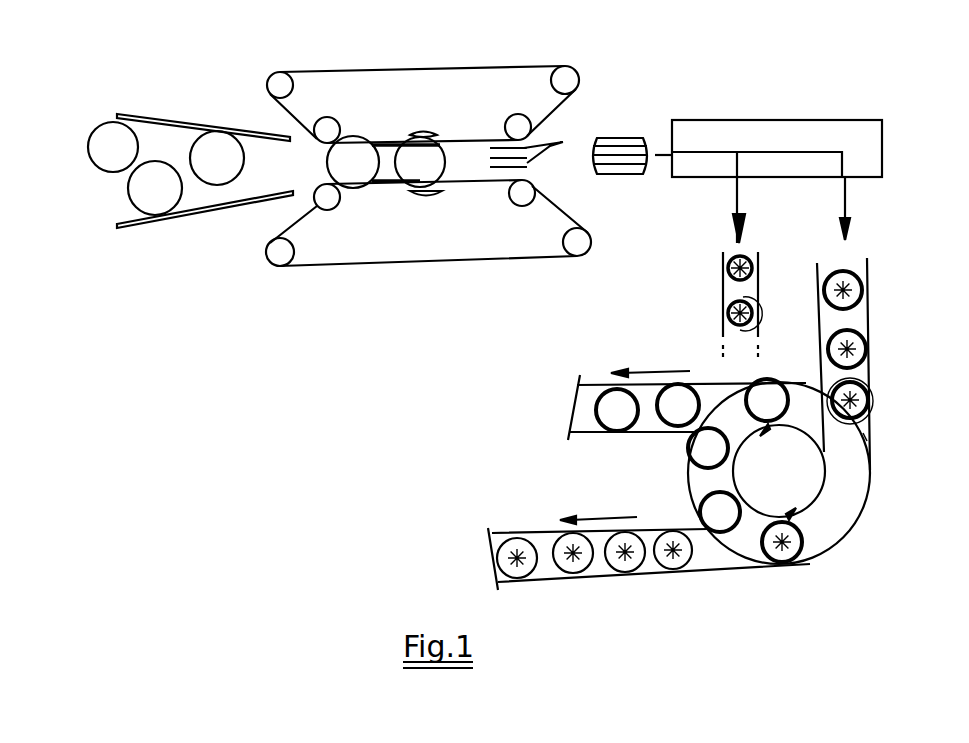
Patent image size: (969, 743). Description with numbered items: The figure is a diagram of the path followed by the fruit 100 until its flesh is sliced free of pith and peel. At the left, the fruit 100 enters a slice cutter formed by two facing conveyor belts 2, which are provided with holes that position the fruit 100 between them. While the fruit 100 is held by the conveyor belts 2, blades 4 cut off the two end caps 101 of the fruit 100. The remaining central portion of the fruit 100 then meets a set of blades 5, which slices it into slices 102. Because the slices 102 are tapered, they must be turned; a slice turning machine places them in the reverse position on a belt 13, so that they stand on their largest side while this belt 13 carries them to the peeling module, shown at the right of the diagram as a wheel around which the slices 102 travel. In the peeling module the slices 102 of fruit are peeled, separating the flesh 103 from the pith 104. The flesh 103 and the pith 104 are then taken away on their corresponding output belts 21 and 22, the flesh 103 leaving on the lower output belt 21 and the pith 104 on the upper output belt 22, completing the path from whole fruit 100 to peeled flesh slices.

The fruit 100 is at (222, 148).
The facing conveyor belts 2 is at (350, 72).
The blades 4 is at (388, 145).
The end caps 101 is at (420, 130).
The set of blades 5 is at (538, 149).
The belt 13 is at (863, 317).
The slices 102 is at (867, 404).
The pith 104 is at (595, 393).
The output belt 22 is at (590, 434).
The flesh 103 is at (637, 563).
The output belt 21 is at (540, 576).